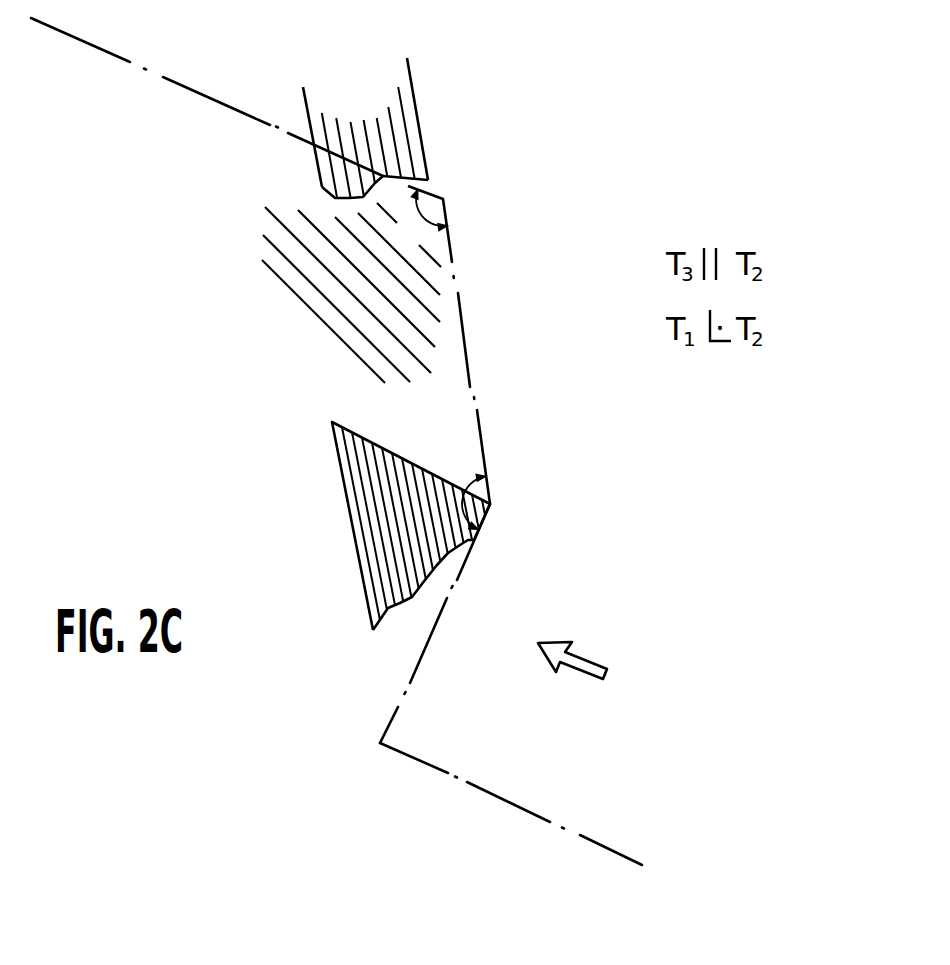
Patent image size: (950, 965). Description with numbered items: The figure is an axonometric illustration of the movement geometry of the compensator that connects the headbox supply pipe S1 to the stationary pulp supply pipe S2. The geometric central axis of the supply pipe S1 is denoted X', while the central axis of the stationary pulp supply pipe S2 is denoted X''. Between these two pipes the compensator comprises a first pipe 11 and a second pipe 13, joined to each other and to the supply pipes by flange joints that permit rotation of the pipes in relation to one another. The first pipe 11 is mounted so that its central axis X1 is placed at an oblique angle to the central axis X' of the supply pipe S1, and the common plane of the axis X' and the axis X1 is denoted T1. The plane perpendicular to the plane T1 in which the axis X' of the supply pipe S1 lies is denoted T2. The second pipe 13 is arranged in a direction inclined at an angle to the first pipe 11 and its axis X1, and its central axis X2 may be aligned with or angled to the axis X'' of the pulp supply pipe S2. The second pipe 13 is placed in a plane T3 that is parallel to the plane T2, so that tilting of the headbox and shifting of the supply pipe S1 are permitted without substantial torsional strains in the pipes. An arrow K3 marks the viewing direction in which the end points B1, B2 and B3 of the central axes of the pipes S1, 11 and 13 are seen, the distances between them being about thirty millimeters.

The central axis of the supply pipe X' is at (207, 97).
The supply pipe S1 is at (357, 88).
The plane perpendicular to plane T1 T2 is at (410, 118).
The end point of the central axis of supply pipe S1 B1 is at (445, 200).
The first pipe 11 is at (543, 270).
The common plane of axes X' and X1 T1 is at (338, 293).
The central axis of the first pipe X1 is at (472, 373).
The end point of the central axis of first pipe 11 B2 is at (492, 502).
The plane of the second pipe T3 is at (370, 515).
The central axis of the second pipe X2 is at (417, 670).
The viewing direction arrow K3 is at (605, 663).
The second pipe 13 is at (551, 733).
The end point of the central axis of second pipe 13 B3 is at (378, 743).
The central axis of the stationary pulp supply pipe X'' is at (511, 804).
The stationary pulp supply pipe S2 is at (657, 824).